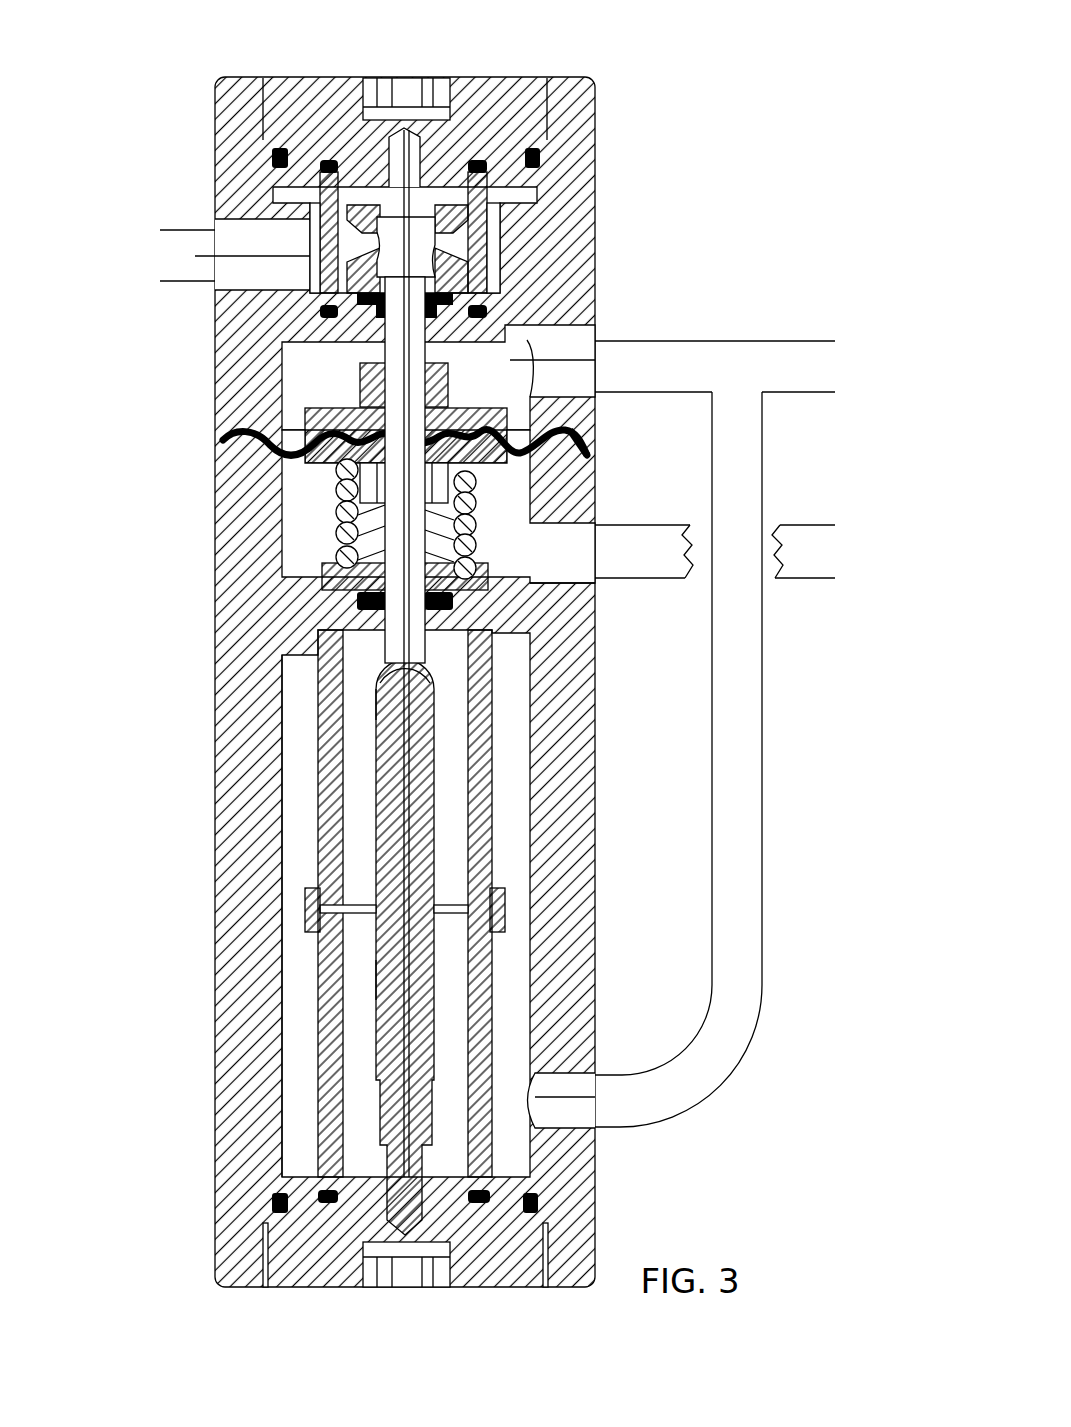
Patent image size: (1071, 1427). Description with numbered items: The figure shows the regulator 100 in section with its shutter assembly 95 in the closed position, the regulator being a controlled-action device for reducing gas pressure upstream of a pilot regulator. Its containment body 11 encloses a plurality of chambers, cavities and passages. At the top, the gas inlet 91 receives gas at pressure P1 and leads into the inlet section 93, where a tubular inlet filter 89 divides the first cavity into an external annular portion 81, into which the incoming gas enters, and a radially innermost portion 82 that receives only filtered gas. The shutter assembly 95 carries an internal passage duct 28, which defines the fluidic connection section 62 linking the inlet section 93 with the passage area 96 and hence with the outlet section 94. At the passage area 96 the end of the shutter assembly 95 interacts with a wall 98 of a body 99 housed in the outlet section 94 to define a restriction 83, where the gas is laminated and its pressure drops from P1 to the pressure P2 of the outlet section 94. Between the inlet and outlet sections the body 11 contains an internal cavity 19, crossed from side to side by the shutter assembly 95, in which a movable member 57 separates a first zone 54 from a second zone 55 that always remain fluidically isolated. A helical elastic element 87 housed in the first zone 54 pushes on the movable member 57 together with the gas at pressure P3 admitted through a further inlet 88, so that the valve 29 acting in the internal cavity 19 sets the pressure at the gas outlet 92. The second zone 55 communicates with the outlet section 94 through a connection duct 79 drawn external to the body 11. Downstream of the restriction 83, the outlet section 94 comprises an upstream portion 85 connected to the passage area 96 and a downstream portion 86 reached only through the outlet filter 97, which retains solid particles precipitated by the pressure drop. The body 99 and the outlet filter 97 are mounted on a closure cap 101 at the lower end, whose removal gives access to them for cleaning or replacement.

The regulator 100 is at (165, 125).
The containment body/casing 11 is at (596, 160).
The gas inlet 91 is at (190, 245).
The inlet gas pressure P1 is at (245, 277).
The external annular portion 81 is at (322, 203).
The inlet section 93 is at (360, 205).
The radially innermost portion 82 is at (423, 230).
The inlet filter 89 is at (482, 225).
The second zone 55 is at (530, 350).
The gas outlet 92 is at (800, 360).
The fluidic connection section 62 is at (400, 393).
The passage duct 28 is at (395, 428).
The valve 29 is at (385, 440).
The internal cavity 19 is at (305, 488).
The shutter assembly 95 is at (393, 560).
The first zone 54 is at (300, 545).
The movable member 57 is at (596, 465).
The elastic element 87 is at (478, 522).
The further inlet 88 is at (596, 565).
The further inlet gas pressure P3 is at (660, 555).
The passage area 96 is at (365, 662).
The wall 98 is at (378, 682).
The restriction 83 is at (382, 680).
The connection duct 79 is at (735, 690).
The outlet section 94 is at (350, 865).
The upstream portion 85 is at (300, 885).
The body 99 is at (400, 965).
The downstream portion 86 is at (300, 985).
The outlet filter 97 is at (335, 1045).
The outlet gas pressure P2 is at (510, 1135).
The closure cap 101 is at (305, 1240).